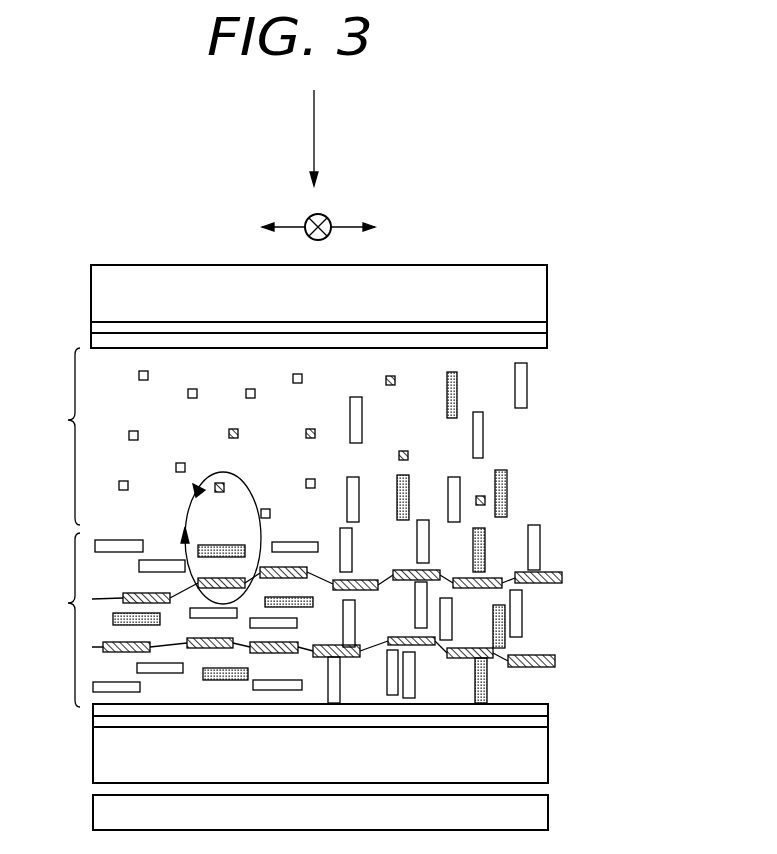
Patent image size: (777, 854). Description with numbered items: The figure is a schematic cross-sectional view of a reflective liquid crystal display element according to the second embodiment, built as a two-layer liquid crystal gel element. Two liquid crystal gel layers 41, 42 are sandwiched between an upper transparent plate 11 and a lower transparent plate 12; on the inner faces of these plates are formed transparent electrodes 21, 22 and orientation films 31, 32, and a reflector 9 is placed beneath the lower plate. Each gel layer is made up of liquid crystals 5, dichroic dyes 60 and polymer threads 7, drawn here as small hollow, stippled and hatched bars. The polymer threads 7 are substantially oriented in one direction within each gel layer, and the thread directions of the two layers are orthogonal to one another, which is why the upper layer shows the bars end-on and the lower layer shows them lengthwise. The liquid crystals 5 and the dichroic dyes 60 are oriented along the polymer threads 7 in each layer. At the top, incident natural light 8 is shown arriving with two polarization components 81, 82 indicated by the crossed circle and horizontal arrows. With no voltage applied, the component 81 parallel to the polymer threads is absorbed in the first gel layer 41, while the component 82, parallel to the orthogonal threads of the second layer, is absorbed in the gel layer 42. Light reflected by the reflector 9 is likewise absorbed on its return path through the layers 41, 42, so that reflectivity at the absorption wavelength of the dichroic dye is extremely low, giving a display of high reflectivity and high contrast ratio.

The incident natural light 8 is at (314, 132).
The component of light 81 is at (306, 216).
The component of light 82 is at (350, 227).
The transparent plate 11 is at (540, 288).
The transparent electrode 21 is at (540, 325).
The orientation film 31 is at (547, 343).
The liquid crystal gel layer 41 is at (283, 436).
The liquid crystal gel layer 42 is at (301, 589).
The dichroic dye 60 is at (507, 483).
The liquid crystal 5 is at (540, 533).
The polymer thread 7 is at (555, 660).
The orientation film 32 is at (548, 706).
The transparent electrode 22 is at (548, 720).
The transparent plate 12 is at (548, 767).
The reflector 9 is at (548, 813).